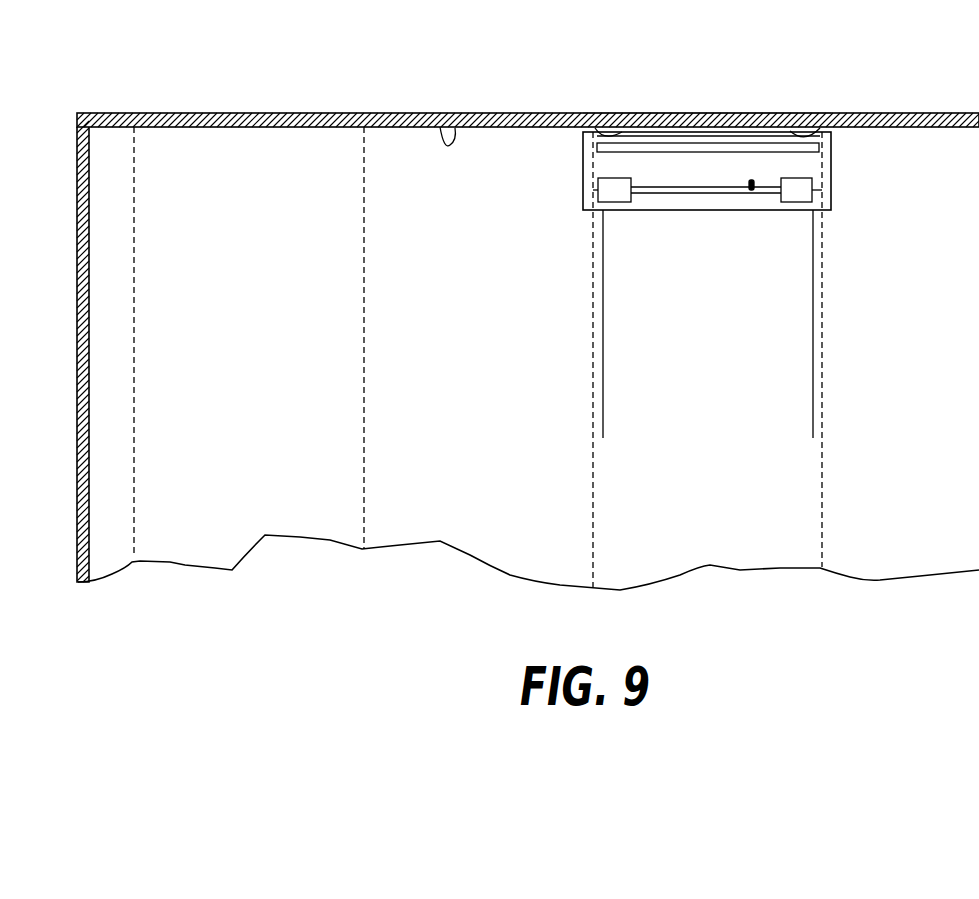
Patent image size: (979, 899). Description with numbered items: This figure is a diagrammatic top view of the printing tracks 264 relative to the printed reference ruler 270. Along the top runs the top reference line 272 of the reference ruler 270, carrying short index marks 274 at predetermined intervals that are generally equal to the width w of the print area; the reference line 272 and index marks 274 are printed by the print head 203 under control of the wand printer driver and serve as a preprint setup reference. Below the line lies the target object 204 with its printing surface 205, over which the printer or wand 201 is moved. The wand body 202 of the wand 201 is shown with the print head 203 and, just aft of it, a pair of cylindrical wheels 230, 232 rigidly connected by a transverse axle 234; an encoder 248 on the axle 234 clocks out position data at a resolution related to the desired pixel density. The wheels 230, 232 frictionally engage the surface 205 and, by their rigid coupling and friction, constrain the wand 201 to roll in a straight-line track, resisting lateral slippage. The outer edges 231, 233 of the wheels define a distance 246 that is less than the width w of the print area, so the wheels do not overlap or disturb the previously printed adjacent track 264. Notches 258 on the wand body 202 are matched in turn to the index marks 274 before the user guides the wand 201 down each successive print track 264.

The wand 201 is at (838, 156).
The wand body 202 is at (590, 152).
The print head 203 is at (705, 124).
The target object 204 is at (263, 541).
The surface 205 is at (109, 549).
The wheel 230 is at (602, 205).
The outer edge 231 is at (598, 190).
The wheel 232 is at (813, 205).
The outer edge 233 is at (812, 189).
The transverse axle 234 is at (732, 206).
The distance 246 is at (812, 427).
The encoder 248 is at (750, 193).
The notches 258 is at (620, 130).
The print track 264 is at (713, 211).
The printable reference ruler 270 is at (235, 111).
The top reference line 272 is at (440, 127).
The index marks 274 is at (134, 126).
The width of the print area w is at (820, 498).